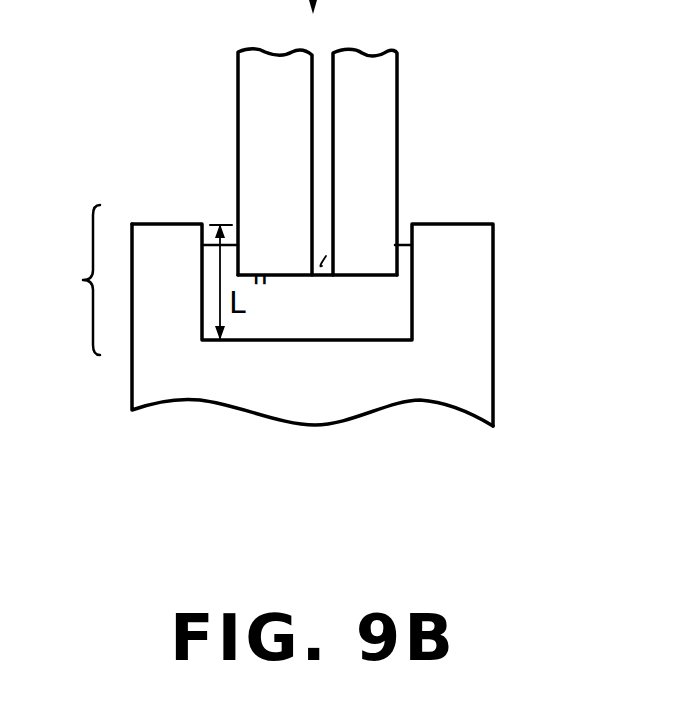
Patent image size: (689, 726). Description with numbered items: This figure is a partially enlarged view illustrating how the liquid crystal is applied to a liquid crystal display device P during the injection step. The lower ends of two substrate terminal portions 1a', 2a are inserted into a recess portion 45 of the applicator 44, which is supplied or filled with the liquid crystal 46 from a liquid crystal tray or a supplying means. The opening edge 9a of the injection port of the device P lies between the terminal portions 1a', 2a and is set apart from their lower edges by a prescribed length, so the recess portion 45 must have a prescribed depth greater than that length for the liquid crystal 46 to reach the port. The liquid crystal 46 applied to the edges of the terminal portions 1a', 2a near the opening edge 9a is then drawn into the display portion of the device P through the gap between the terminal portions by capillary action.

The substrate terminal portion 1a' is at (227, 162).
The substrate terminal portion 2a is at (365, 90).
The liquid crystal display device P is at (405, 141).
The opening edge 9a is at (330, 252).
The applicator 44 is at (449, 370).
The recess portion 45 is at (60, 280).
The liquid crystal 46 is at (315, 312).